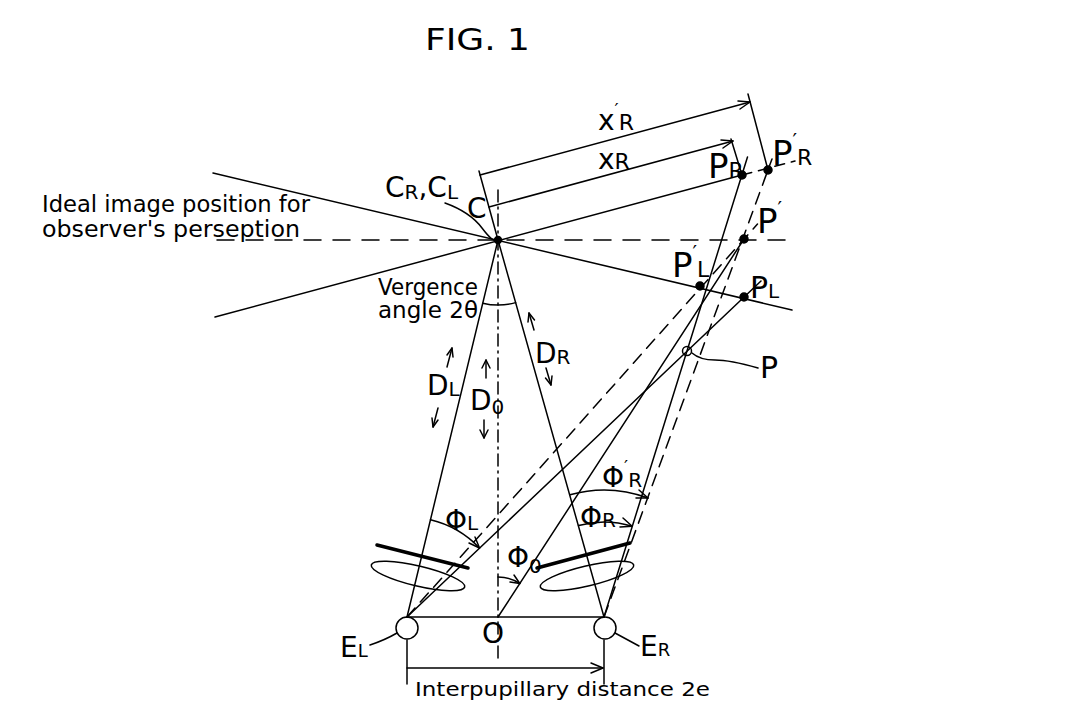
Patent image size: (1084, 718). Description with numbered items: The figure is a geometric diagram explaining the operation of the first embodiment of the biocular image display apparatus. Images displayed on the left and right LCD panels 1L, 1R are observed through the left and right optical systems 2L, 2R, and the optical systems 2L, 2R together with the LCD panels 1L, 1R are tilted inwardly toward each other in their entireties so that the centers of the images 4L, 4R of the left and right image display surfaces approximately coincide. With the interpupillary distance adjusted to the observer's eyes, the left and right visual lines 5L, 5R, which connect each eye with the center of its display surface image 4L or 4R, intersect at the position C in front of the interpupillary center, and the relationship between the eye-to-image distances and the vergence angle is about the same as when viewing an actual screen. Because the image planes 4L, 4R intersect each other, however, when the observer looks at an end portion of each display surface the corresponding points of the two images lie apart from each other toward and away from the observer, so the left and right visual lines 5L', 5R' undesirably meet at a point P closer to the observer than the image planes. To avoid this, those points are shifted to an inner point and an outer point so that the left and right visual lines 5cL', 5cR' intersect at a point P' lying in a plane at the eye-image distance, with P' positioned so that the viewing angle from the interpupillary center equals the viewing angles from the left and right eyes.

The left LCD panel 1L is at (378, 545).
The right LCD panel 1R is at (624, 545).
The left optical system 2L is at (371, 565).
The right optical system 2R is at (633, 566).
The image of left image display surface 4L is at (262, 184).
The image of right image display surface 4R is at (297, 296).
The left visual line 5L is at (439, 428).
The right visual line 5R is at (551, 428).
The left visual line to end portion 5L' is at (584, 449).
The right visual line to end portion 5R' is at (681, 387).
The corrected left visual line 5cL' is at (582, 420).
The corrected right visual line 5cR' is at (714, 388).